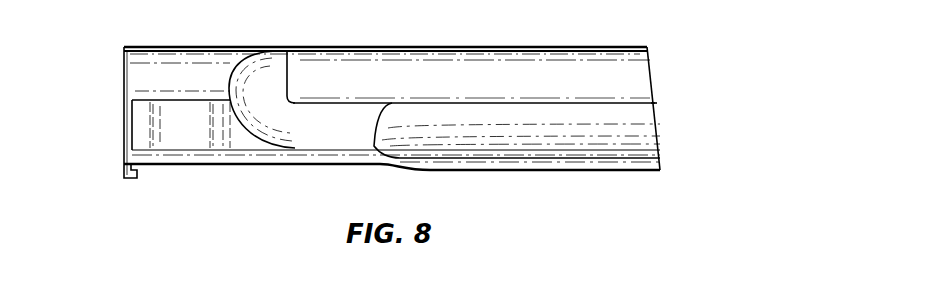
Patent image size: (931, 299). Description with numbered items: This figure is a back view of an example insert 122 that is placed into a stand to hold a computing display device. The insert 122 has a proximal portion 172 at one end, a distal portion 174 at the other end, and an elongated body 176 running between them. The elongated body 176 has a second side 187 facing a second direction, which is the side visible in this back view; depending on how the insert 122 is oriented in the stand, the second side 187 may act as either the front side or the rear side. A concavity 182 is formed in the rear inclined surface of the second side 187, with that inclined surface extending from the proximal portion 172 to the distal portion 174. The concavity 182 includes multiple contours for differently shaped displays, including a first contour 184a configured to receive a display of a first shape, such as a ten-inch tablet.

The insert 122 is at (136, 81).
The proximal portion 172 is at (129, 46).
The distal portion 174 is at (646, 47).
The elongated body 176 is at (320, 47).
The concavity 182 is at (490, 79).
The first contour 184a is at (293, 127).
The second side 187 is at (168, 93).